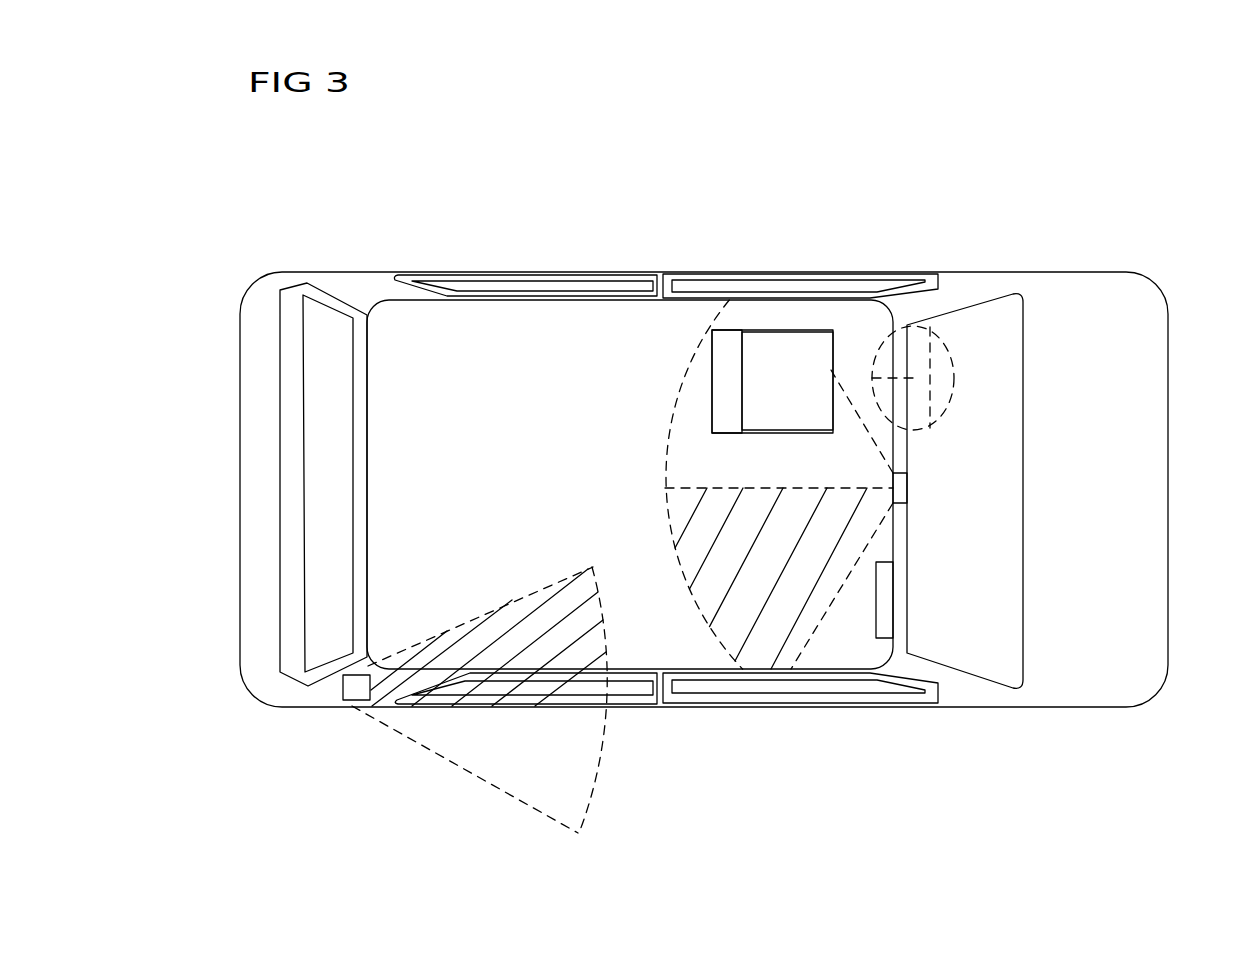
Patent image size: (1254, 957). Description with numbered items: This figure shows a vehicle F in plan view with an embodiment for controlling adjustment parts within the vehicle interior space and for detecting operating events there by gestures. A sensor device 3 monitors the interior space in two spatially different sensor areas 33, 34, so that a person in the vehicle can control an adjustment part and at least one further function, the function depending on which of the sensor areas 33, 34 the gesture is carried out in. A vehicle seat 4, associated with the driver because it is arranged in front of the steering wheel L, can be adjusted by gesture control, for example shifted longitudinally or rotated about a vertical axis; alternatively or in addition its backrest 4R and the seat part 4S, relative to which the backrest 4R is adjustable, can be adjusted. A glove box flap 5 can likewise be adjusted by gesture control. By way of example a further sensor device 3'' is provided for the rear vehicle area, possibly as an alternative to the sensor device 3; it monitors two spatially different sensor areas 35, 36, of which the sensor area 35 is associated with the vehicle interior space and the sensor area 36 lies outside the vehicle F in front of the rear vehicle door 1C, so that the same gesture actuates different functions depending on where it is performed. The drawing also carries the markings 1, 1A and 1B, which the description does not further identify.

The vehicle 1 is at (410, 492).
The rear window 1A is at (293, 378).
The front side roof rail / pillar portion 1B is at (812, 290).
The rear vehicle door 1C is at (497, 275).
The sensor device 3 is at (813, 519).
The sensor device 3'' is at (440, 700).
The vehicle seat 4 is at (740, 320).
The backrest 4R is at (728, 358).
The seat part 4S is at (810, 360).
The glove box flap 5 is at (883, 618).
The sensor area 33 is at (697, 390).
The sensor area 34 is at (697, 545).
The sensor area 35 is at (482, 637).
The sensor area 36 is at (572, 790).
The steering wheel L is at (960, 371).
The vehicle F is at (1158, 273).